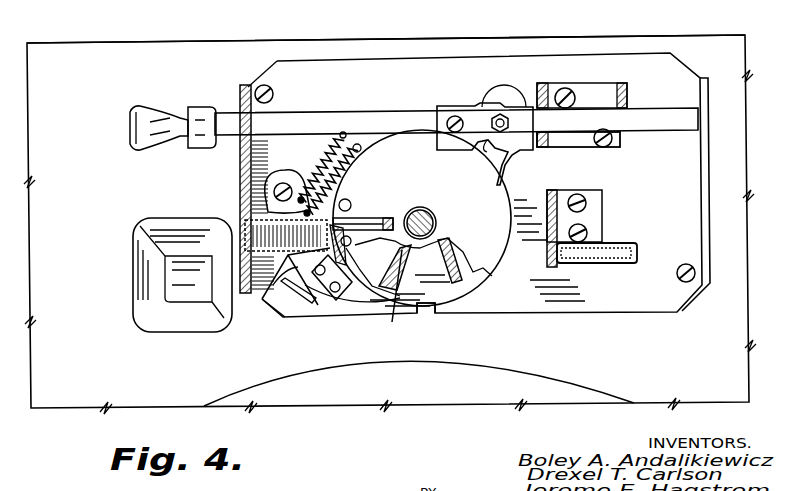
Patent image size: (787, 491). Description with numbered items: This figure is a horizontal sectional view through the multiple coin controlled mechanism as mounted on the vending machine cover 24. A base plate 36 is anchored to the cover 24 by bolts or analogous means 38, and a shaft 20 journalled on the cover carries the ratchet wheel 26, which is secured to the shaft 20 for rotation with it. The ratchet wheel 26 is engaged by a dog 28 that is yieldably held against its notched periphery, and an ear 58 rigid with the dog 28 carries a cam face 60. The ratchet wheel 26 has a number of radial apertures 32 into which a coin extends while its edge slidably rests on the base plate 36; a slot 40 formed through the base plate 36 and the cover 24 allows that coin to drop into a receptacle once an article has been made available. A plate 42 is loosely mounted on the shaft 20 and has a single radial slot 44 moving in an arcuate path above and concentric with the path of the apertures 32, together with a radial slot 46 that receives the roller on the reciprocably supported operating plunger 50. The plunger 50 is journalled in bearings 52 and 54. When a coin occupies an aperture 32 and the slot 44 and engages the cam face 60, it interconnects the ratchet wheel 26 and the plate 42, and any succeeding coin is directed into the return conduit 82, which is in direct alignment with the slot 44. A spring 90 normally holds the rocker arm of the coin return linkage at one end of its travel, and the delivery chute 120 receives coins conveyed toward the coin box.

The vending machine cover 24 is at (428, 40).
The bearing 54 is at (240, 96).
The bolts 38 is at (274, 92).
The operating plunger 50 is at (313, 118).
The bearing 52 is at (556, 84).
The base plate 36 is at (668, 76).
The return conduit 82 is at (240, 220).
The spring 90 is at (342, 184).
The radial slot 44 is at (383, 216).
The shaft 20 is at (425, 207).
The plate 42 is at (490, 222).
The radial slot 46 is at (482, 156).
The delivery chute 120 is at (602, 266).
The dog 28 is at (266, 300).
The ear 58 is at (324, 300).
The cam face 60 is at (373, 270).
The radial apertures 32 is at (383, 300).
The slot 40 is at (394, 322).
The ratchet wheel 26 is at (418, 316).